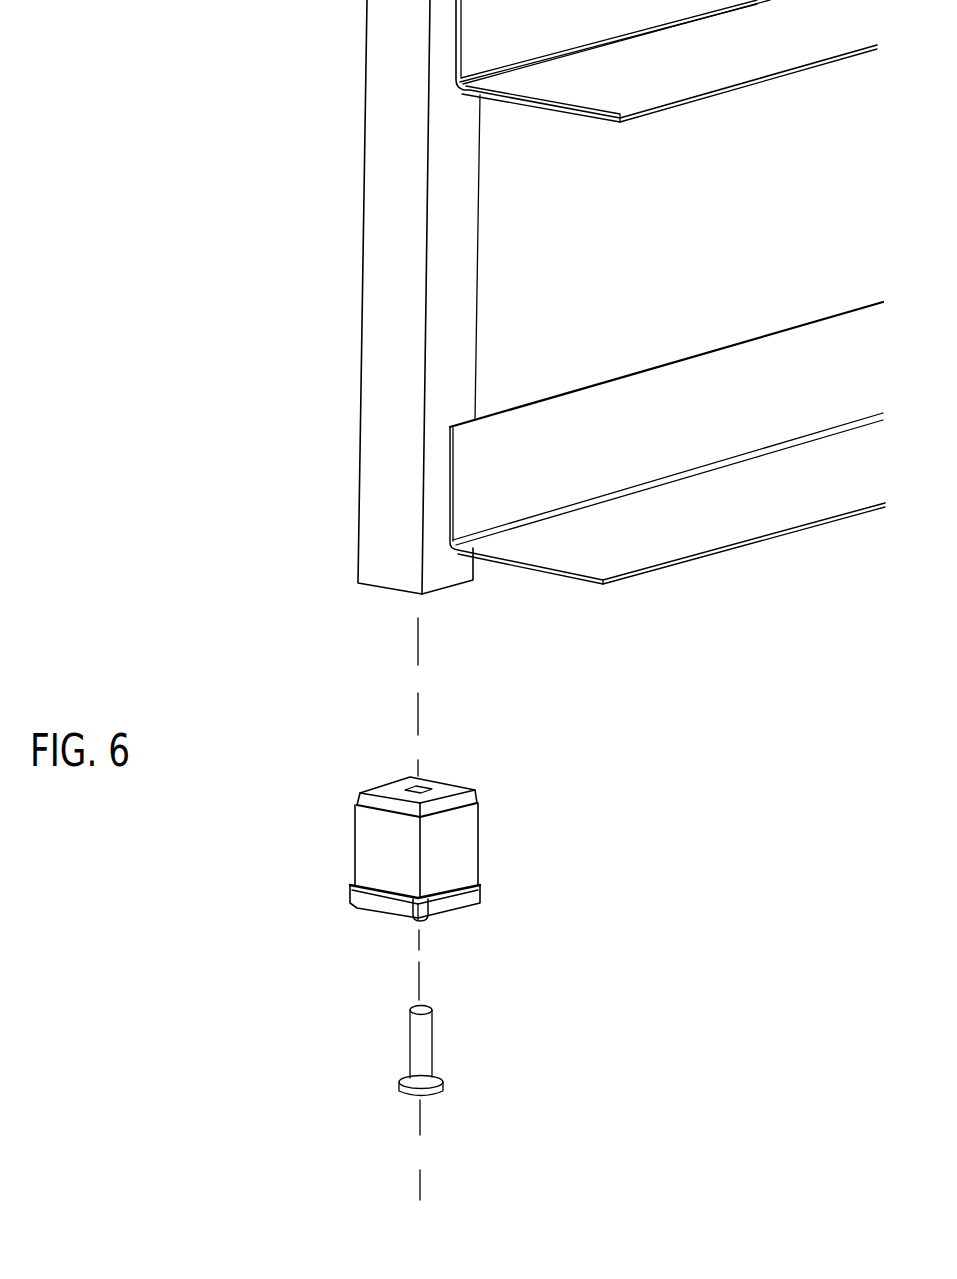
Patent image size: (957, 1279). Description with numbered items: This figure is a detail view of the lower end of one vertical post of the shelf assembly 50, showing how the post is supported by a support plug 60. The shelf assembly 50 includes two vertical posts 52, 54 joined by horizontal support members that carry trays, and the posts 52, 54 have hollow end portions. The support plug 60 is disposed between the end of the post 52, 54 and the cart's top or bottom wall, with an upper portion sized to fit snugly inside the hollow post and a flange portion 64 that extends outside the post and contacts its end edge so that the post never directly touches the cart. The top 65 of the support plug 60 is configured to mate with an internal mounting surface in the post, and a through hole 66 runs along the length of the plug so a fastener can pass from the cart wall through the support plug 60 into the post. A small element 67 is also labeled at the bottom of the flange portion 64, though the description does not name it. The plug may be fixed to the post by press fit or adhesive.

The shelf assembly 50 is at (380, 204).
The vertical post 52 is at (383, 367).
The vertical post 54 is at (637, 542).
The support plug 60 is at (458, 863).
The flange portion 64 is at (362, 912).
The top 65 is at (387, 788).
The through hole 66 is at (420, 790).
The tab 67 is at (420, 920).